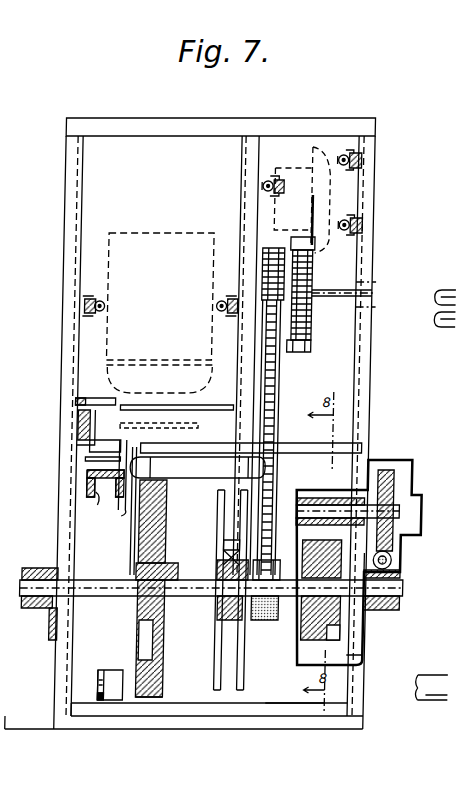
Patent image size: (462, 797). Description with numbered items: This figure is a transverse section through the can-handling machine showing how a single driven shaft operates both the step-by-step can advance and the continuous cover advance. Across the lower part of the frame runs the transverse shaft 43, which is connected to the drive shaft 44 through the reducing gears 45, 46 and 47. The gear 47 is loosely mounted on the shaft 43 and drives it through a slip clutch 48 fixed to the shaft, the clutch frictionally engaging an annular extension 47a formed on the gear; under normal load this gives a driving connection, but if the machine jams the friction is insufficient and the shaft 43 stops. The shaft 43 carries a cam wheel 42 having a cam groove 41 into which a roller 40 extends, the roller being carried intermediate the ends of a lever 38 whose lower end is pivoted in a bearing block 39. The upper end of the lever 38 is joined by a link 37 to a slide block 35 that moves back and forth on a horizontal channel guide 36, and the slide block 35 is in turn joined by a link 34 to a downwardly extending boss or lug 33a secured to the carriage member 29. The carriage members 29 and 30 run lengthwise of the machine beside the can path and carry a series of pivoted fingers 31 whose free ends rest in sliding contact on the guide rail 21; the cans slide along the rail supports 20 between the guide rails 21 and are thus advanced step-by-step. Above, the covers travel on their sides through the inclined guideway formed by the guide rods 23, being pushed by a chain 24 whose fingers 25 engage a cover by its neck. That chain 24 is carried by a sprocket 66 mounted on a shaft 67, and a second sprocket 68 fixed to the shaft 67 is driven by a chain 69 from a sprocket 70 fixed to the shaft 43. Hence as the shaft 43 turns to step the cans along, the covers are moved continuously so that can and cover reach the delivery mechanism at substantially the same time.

The rail supports 20 is at (186, 455).
The guide rails 21 is at (131, 405).
The guide rods 23 is at (343, 156).
The chain 24 is at (318, 344).
The fingers 25 is at (316, 207).
The carriage member 29 is at (108, 402).
The carriage member 30 is at (86, 440).
The fingers 31 is at (168, 403).
The boss or lug 33a is at (99, 448).
The link 34 is at (100, 462).
The slide block 35 is at (97, 487).
The horizontal channel guide 36 is at (108, 500).
The link 37 is at (133, 512).
The lever 38 is at (138, 558).
The bearing block 39 is at (122, 672).
The roller 40 is at (168, 618).
The cam groove 41 is at (160, 650).
The cam wheel 42 is at (165, 684).
The transverse shaft 43 is at (92, 604).
The drive shaft 44 is at (403, 566).
The reducing gear 45 is at (404, 490).
The reducing gear 46 is at (318, 498).
The gear 47 is at (308, 662).
The annular extension 47a is at (362, 656).
The slip clutch 48 is at (372, 631).
The sprocket 66 is at (318, 264).
The shaft 67 is at (355, 300).
The second sprocket 68 is at (268, 256).
The chain 69 is at (287, 377).
The sprocket 70 is at (262, 620).